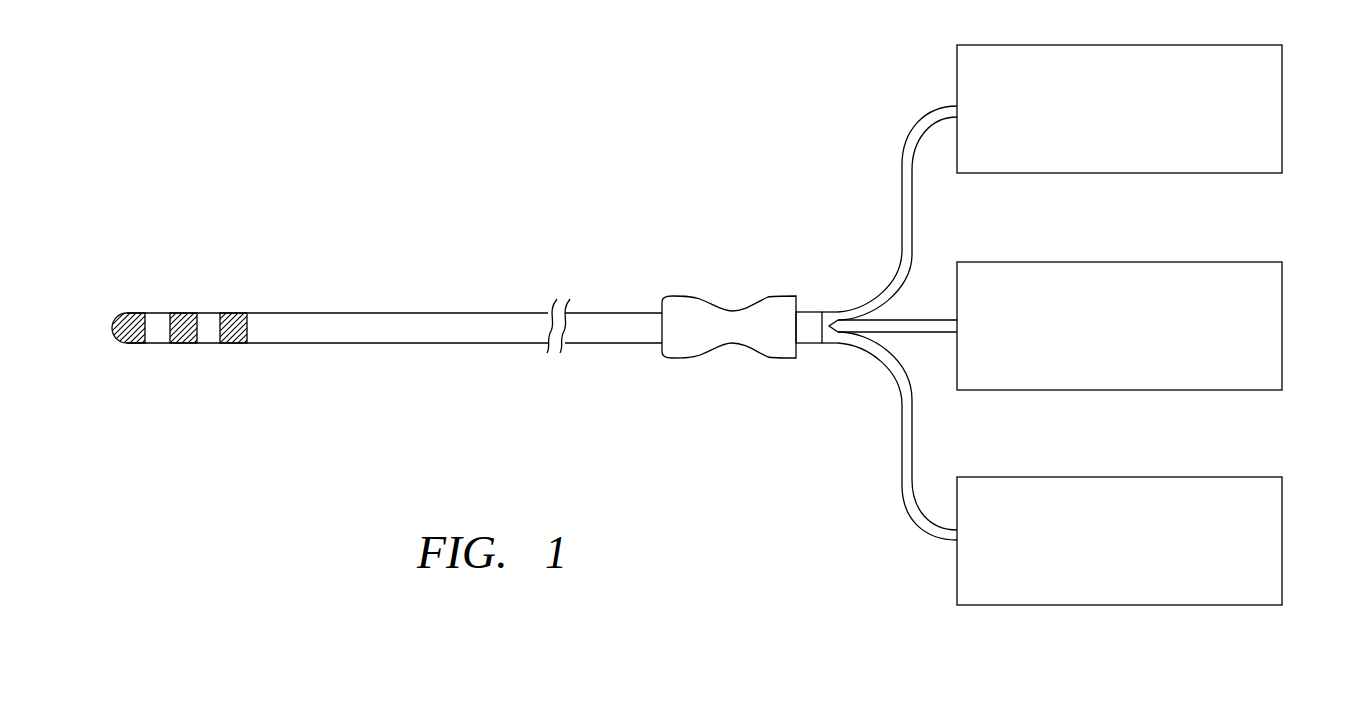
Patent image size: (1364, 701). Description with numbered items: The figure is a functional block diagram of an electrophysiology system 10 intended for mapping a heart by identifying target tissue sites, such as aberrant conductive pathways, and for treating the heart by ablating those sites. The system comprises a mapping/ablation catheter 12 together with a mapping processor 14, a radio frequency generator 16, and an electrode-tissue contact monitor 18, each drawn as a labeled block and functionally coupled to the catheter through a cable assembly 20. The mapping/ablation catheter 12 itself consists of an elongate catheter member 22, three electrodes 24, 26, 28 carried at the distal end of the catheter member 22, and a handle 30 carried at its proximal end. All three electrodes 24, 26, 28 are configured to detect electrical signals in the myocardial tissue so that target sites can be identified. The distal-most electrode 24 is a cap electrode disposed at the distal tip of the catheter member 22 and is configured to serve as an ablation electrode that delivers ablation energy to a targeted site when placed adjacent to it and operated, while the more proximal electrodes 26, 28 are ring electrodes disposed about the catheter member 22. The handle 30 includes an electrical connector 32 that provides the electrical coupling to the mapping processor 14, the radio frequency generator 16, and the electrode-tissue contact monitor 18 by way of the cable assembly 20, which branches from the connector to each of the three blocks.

The electrophysiology (EP) system 10 is at (577, 163).
The mapping/ablation catheter 12 is at (405, 312).
The mapping processor 14 is at (1282, 108).
The radio frequency (RF) generator 16 is at (1282, 324).
The electrode-tissue contact monitor 18 is at (1282, 539).
The cable assembly 20 is at (876, 356).
The elongate catheter member 22 is at (331, 334).
The cap electrode 24 is at (137, 313).
The ring electrode 26 is at (183, 312).
The ring electrode 28 is at (234, 313).
The handle 30 is at (731, 310).
The electrical connector 32 is at (807, 318).